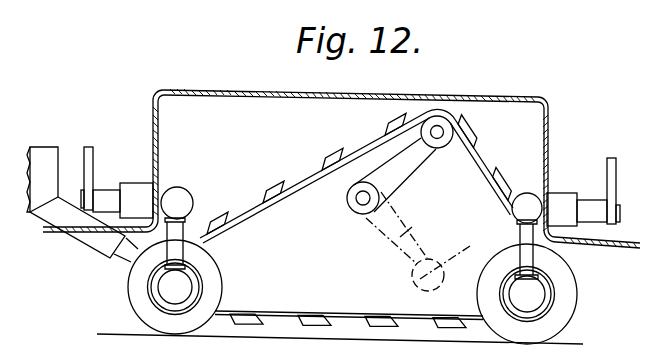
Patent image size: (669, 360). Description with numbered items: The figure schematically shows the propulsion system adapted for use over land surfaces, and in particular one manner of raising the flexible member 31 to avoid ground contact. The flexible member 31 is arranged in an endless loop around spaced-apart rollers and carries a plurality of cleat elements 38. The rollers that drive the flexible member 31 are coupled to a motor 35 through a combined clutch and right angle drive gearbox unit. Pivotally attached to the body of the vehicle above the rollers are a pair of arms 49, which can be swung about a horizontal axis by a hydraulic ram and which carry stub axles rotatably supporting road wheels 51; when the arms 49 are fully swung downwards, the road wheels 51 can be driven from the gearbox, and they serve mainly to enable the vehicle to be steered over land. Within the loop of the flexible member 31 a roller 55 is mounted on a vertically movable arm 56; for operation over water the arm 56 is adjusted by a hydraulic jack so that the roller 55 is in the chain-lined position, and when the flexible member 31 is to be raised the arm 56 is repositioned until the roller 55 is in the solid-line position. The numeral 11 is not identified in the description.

The housing 11 is at (248, 88).
The motor 35 is at (52, 158).
The arms 49 is at (105, 198).
The cleat elements 38 is at (283, 186).
The flexible member 31 is at (262, 208).
The vertically movable arm 56 is at (393, 187).
The roller 55 is at (470, 158).
The road wheels 51 is at (135, 292).